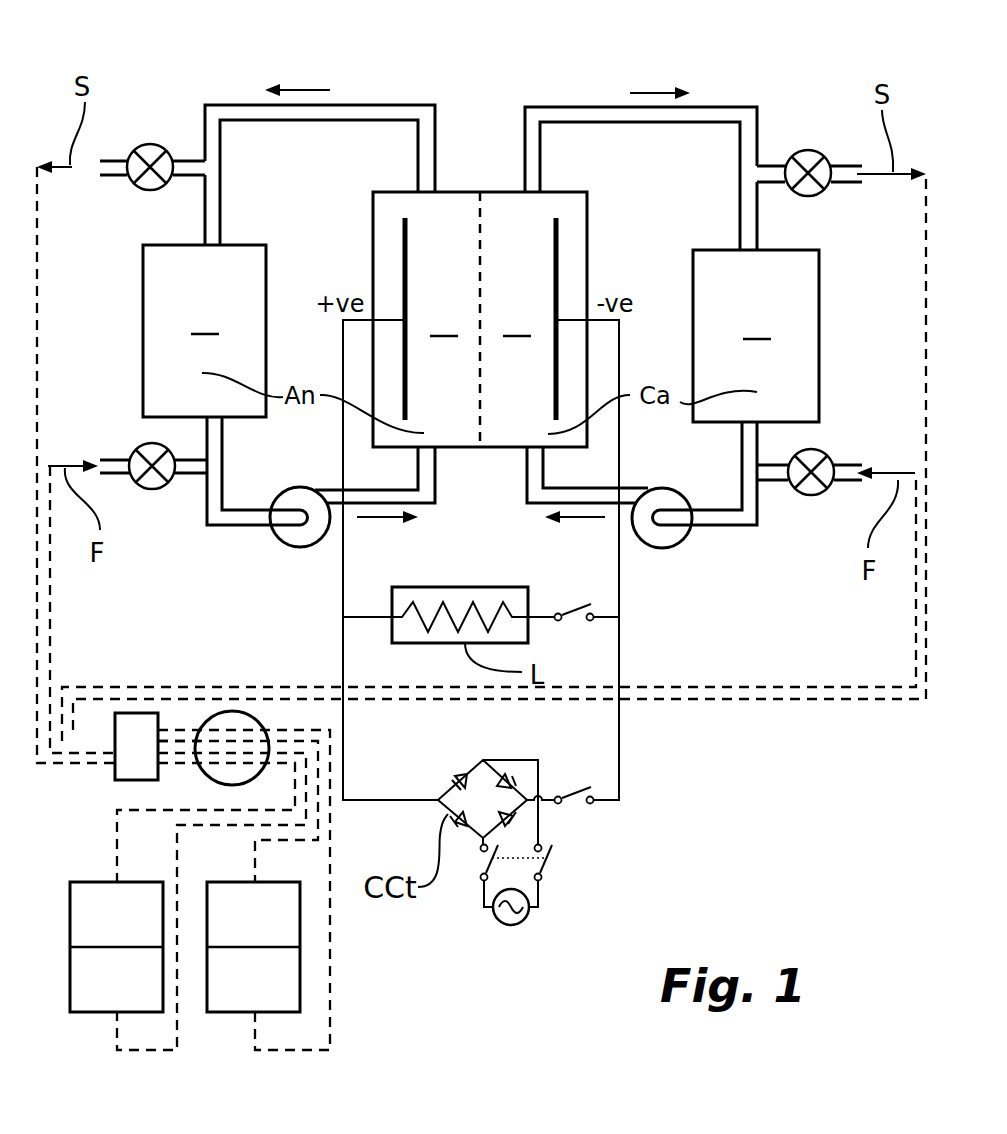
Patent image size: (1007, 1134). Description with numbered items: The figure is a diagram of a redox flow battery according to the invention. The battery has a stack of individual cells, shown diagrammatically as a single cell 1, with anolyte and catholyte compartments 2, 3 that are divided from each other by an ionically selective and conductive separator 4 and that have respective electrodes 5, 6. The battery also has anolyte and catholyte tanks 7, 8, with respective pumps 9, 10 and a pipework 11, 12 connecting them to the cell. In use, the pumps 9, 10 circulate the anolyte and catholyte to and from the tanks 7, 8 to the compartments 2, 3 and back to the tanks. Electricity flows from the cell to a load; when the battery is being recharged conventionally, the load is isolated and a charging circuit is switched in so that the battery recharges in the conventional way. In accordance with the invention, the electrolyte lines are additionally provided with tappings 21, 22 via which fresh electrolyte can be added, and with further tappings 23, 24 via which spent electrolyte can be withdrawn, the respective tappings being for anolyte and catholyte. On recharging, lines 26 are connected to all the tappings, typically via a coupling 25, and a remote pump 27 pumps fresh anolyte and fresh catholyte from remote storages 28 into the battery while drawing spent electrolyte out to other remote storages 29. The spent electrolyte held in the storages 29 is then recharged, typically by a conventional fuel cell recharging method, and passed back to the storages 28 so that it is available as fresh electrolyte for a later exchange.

The cell 1 is at (474, 191).
The anolyte compartment 2 is at (444, 321).
The catholyte compartment 3 is at (517, 321).
The separator 4 is at (484, 404).
The electrode 5 is at (402, 263).
The electrode 6 is at (558, 265).
The anolyte tank 7 is at (221, 385).
The catholyte tank 8 is at (739, 387).
The pump 9 is at (288, 540).
The pump 10 is at (665, 542).
The pipework 11 is at (368, 105).
The pipework 12 is at (600, 107).
The tapping 21 is at (184, 478).
The tapping 22 is at (777, 483).
The tapping 23 is at (182, 161).
The tapping 24 is at (776, 166).
The coupling 25 is at (135, 767).
The lines 26 is at (182, 728).
The remote pump 27 is at (217, 743).
The remote storages 28 is at (100, 986).
The remote storages 29 is at (282, 987).